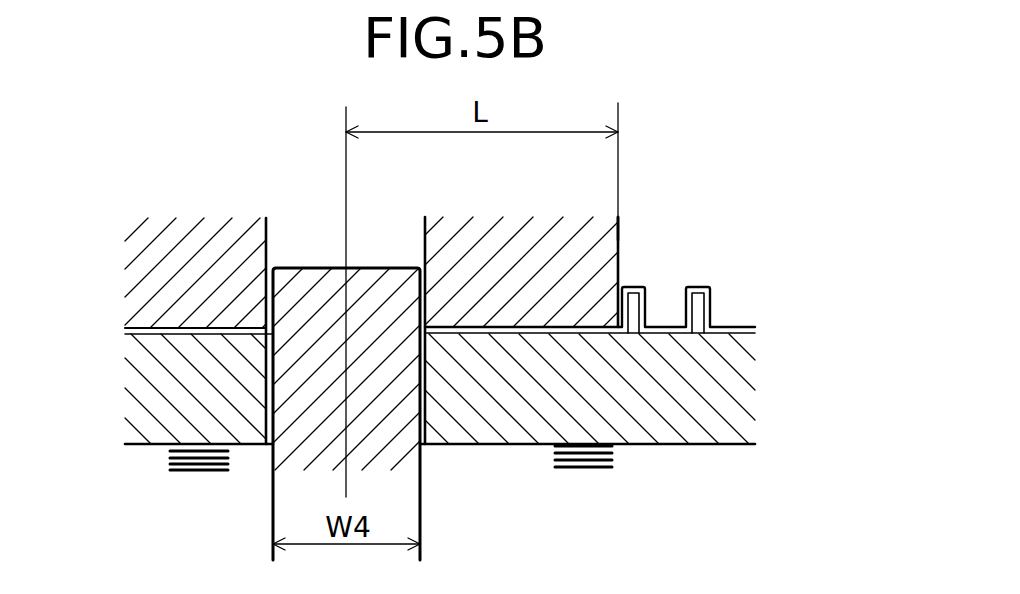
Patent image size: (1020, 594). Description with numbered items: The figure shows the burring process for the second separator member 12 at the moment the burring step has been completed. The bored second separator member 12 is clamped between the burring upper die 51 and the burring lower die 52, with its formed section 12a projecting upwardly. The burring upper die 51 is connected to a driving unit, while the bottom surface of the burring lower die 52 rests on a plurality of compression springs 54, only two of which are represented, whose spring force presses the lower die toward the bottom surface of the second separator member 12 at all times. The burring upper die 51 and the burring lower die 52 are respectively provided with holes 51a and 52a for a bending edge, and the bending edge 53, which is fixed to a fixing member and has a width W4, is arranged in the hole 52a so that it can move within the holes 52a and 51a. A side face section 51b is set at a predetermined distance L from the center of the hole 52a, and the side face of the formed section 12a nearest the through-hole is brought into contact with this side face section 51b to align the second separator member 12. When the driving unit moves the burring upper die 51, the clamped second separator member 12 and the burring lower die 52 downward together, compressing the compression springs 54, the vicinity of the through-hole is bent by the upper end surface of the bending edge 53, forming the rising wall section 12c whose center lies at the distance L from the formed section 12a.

The hole for bending edge of burring upper die 51a is at (277, 238).
The rising wall section 12c is at (273, 302).
The hole for bending edge of burring lower die 52a is at (272, 352).
The bending edge 53 is at (310, 452).
The burring upper die 51 is at (517, 248).
The burring lower die 52 is at (482, 447).
The second separator member 12 is at (733, 325).
The formed section 12a is at (633, 287).
The side face section 51b is at (620, 240).
The compression spring 54 is at (185, 479).